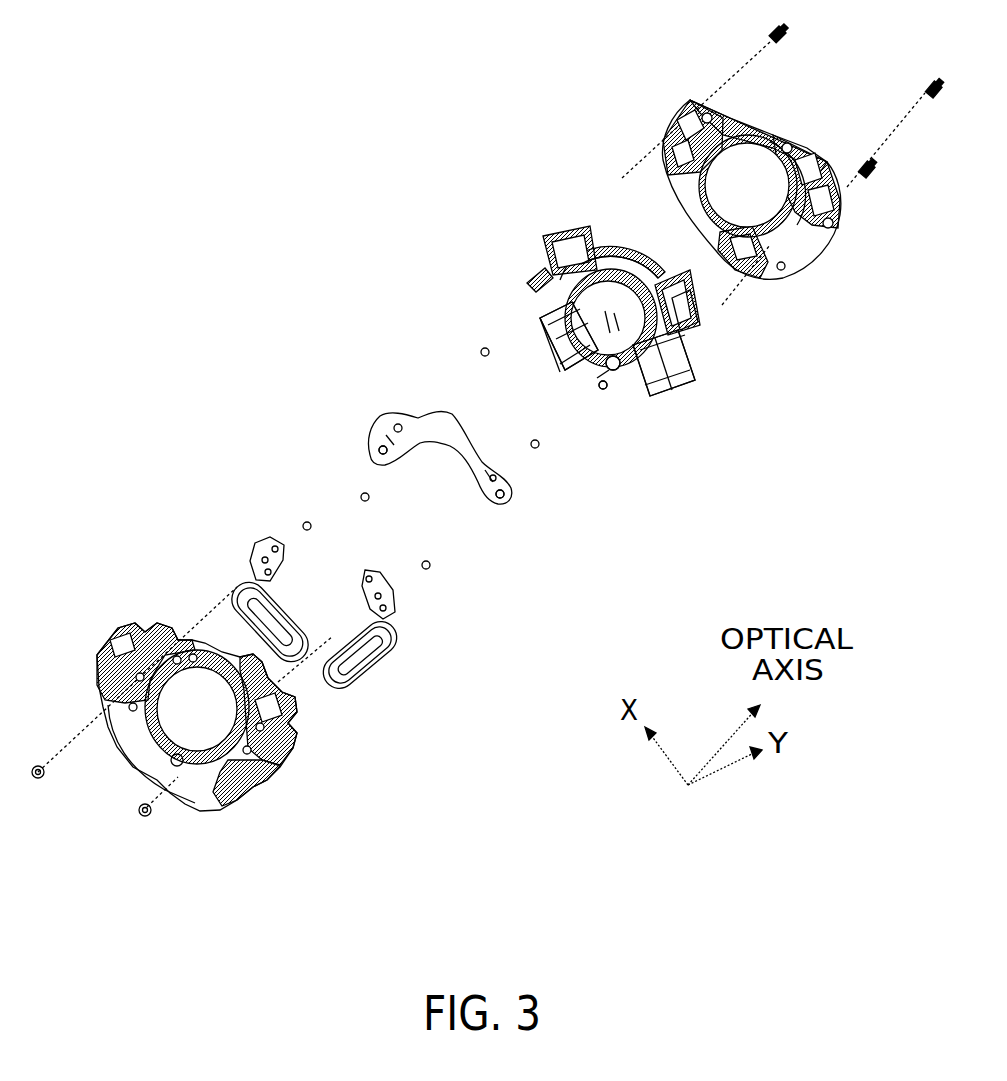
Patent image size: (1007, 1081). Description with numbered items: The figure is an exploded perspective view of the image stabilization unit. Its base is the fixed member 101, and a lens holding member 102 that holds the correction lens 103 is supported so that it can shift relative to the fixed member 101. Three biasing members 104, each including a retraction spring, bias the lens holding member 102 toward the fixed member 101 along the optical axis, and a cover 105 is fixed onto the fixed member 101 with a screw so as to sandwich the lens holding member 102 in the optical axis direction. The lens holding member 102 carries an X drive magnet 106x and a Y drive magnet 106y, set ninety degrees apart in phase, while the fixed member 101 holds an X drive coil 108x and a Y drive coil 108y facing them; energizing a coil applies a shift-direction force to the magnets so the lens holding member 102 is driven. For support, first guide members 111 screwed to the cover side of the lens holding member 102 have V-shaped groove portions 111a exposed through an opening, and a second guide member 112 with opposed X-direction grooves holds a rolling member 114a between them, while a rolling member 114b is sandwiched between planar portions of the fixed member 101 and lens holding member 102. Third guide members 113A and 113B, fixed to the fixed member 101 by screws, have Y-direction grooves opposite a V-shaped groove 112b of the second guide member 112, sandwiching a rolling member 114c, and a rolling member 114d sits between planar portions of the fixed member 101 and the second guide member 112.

The fixed member (base member) 101 is at (250, 768).
The lens holding member 102 is at (580, 240).
The correction lens 103 is at (598, 325).
The biasing member 104 is at (530, 273).
The cover 105 is at (676, 118).
The X drive magnet 106x is at (657, 383).
The Y drive magnet 106y is at (540, 315).
The X drive coil 108x is at (372, 690).
The Y drive coil 108y is at (230, 592).
The first guide member 111 is at (627, 247).
The V-shaped groove portion 111a is at (530, 283).
The second guide member 112 is at (400, 420).
The V-shaped groove 112b is at (375, 443).
The third guide member 113A is at (394, 598).
The third guide member 113B is at (262, 543).
The rolling member (ball) 114a is at (478, 348).
The rolling member 114b is at (540, 449).
The rolling member 114c is at (303, 522).
The rolling member 114d is at (362, 493).